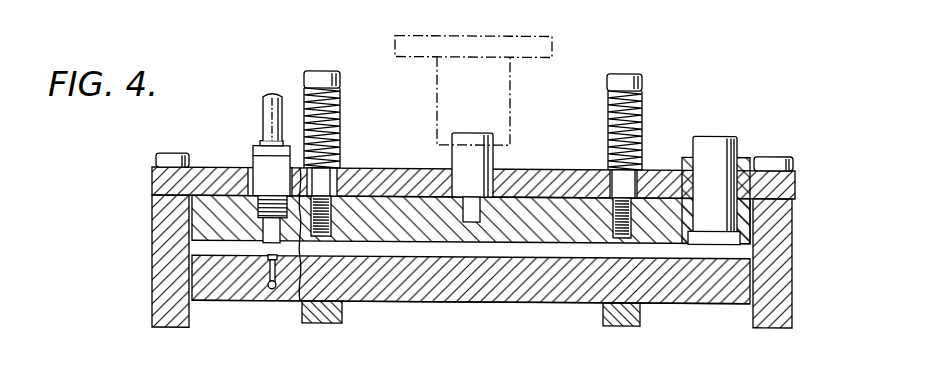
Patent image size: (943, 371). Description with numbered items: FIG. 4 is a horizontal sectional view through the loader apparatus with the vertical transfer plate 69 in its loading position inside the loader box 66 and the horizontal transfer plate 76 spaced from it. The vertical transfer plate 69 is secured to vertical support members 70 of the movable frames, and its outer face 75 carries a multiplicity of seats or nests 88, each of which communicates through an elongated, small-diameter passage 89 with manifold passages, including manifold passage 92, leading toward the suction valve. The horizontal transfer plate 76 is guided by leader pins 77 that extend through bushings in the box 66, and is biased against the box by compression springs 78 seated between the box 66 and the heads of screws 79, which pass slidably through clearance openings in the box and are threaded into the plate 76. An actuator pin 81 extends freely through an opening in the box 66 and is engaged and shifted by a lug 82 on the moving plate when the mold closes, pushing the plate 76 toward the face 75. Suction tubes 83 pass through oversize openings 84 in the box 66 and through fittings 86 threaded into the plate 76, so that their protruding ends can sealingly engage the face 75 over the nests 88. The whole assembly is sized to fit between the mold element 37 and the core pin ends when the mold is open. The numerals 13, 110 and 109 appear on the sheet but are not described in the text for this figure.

The section line 13- 13 is at (121, 281).
The loader box 66 is at (372, 169).
The vertical transfer plate 69 is at (668, 301).
The vertical support members 70 is at (342, 313).
The outer face 75 is at (425, 257).
The horizontal transfer plate 76 is at (553, 205).
The leader pins 77 is at (720, 140).
The compression springs 78 is at (338, 103).
The screws 79 is at (317, 68).
The actuator pin 81 is at (493, 141).
The lug 82 is at (437, 106).
The suction tubes 83 is at (263, 111).
The oversize openings 84 is at (250, 170).
The fittings 86 is at (272, 163).
The nests 88 is at (268, 259).
The passage 89 is at (291, 270).
The manifold passage 92 is at (276, 292).
The numeral 110 is at (105, 362).
The mold element 37 is at (151, 362).
The numeral 109 is at (219, 362).